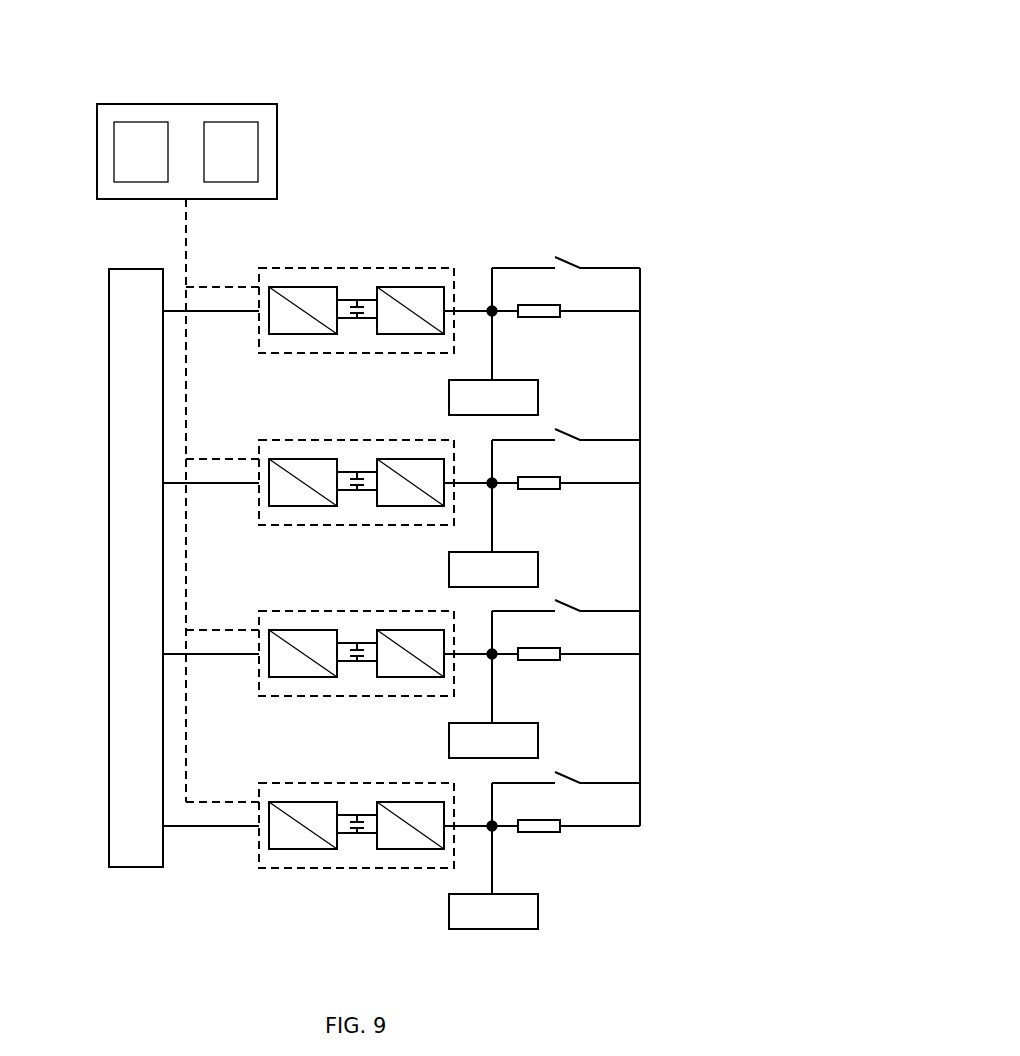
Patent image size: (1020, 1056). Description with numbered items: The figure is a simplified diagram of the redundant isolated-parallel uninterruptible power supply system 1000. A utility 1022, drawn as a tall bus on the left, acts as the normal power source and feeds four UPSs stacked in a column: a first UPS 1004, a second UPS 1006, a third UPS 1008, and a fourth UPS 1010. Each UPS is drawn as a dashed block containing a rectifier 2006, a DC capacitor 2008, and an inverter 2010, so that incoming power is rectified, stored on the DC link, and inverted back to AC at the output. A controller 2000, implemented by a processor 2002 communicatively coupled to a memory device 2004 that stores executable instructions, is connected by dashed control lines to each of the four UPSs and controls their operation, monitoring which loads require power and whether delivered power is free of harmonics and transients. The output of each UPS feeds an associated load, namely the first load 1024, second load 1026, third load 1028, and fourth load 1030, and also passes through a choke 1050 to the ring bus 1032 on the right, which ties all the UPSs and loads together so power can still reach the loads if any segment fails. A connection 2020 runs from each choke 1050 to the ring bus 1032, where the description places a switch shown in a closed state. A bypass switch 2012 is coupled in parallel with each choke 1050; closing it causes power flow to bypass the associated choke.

The redundant isolated-parallel uninterruptible power supply system 1000 is at (526, 60).
The controller 2000 is at (278, 143).
The processor 2002 is at (140, 122).
The memory device 2004 is at (232, 122).
The utility 1022 is at (108, 566).
The ring bus 1032 is at (642, 407).
The first UPS 1004 is at (303, 268).
The second UPS 1006 is at (303, 440).
The third UPS 1008 is at (303, 611).
The fourth UPS 1010 is at (303, 783).
The rectifier 2006 is at (300, 850).
The DC capacitor 2008 is at (347, 850).
The inverter 2010 is at (410, 850).
The bypass switch 2012 is at (568, 256).
The choke 1050 is at (531, 318).
The connection line 2020 is at (603, 313).
The first load 1024 is at (448, 397).
The second load 1026 is at (448, 569).
The third load 1028 is at (448, 740).
The fourth load 1030 is at (540, 911).